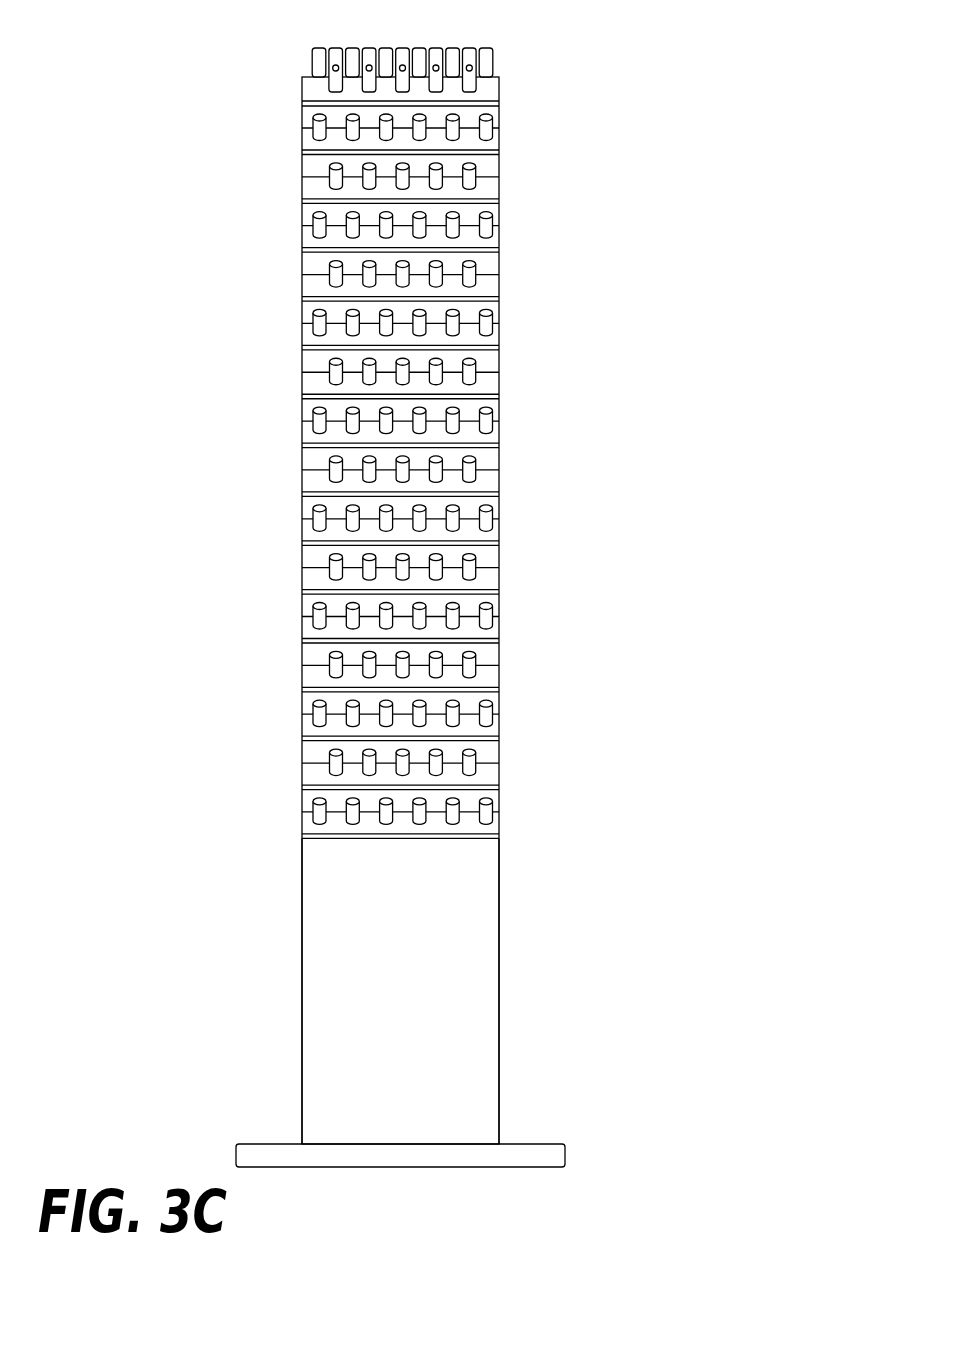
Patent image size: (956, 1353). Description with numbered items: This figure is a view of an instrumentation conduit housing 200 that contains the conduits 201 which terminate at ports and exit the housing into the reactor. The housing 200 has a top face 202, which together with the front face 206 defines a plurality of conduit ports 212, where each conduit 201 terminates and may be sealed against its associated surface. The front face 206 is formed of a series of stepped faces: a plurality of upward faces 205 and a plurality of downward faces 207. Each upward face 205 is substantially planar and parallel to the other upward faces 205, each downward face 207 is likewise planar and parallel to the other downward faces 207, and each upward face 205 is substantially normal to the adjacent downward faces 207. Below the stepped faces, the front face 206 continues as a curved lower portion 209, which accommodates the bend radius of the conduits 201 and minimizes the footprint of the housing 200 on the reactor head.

The instrumentation conduit housing 200 is at (473, 585).
The conduits 201 is at (447, 52).
The top face 202 is at (307, 76).
The conduit ports 212 is at (317, 138).
The upward faces 205 is at (310, 242).
The downward faces 207 is at (315, 360).
The front face 206 is at (292, 476).
The curved lower portion 209 is at (358, 958).